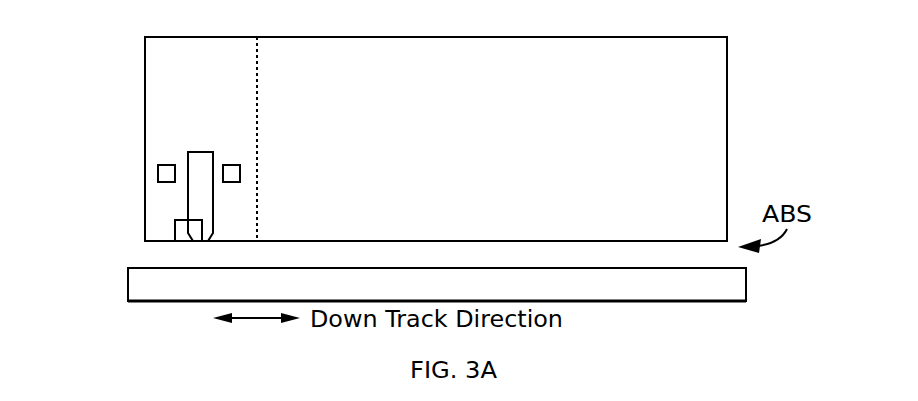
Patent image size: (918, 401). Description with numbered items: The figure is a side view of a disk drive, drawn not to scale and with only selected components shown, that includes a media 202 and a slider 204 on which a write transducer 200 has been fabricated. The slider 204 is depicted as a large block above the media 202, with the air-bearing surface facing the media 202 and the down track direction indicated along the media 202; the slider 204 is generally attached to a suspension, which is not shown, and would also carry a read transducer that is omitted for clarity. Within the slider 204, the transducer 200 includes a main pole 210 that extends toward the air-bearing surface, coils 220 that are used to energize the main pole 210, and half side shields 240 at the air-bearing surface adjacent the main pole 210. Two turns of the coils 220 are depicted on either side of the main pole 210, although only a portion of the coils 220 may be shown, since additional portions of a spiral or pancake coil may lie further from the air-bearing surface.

The transducer 200 is at (145, 37).
The media 202 is at (128, 300).
The slider 204 is at (727, 105).
The main pole 210 is at (189, 153).
The coils 220 is at (223, 164).
The half side shields 240 is at (183, 241).